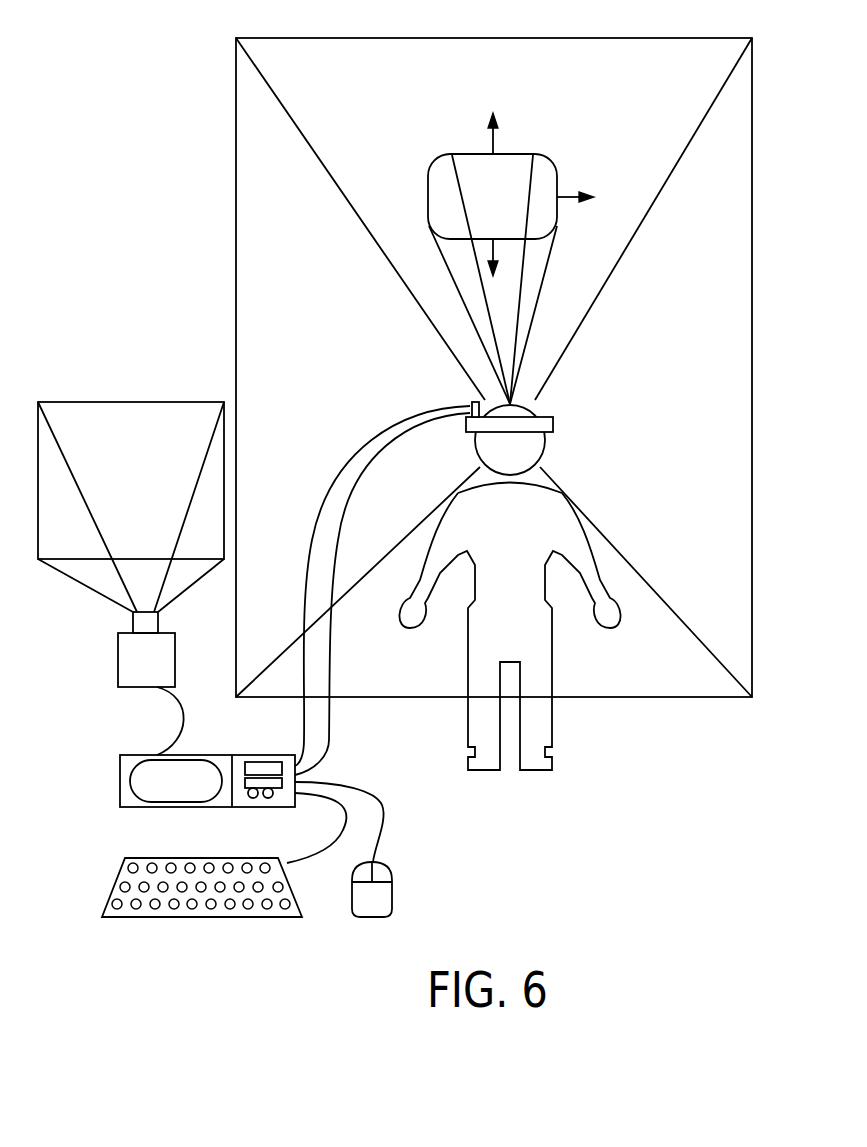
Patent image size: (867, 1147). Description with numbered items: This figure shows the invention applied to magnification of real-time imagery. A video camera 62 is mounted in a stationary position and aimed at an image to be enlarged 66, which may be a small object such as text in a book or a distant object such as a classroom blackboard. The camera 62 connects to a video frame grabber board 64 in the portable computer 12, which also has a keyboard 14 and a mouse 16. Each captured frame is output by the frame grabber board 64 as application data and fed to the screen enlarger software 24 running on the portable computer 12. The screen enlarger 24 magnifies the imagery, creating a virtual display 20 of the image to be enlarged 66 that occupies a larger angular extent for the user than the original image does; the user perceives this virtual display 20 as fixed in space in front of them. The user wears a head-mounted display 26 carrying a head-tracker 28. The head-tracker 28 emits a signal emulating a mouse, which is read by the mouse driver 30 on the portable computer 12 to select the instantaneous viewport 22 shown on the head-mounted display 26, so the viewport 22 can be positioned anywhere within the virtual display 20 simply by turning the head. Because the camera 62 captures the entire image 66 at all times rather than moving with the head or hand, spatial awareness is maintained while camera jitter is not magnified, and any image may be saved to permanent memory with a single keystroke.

The portable computer 12 is at (120, 785).
The keyboard 14 is at (108, 880).
The mouse 16 is at (392, 893).
The virtual display 20 is at (752, 340).
The instantaneous viewport 22 is at (527, 152).
The screen enlarger software 24 is at (145, 788).
The head-mounted display 26 is at (555, 422).
The head-tracker 28 is at (470, 400).
The mouse driver 30 is at (158, 772).
The video camera 62 is at (118, 653).
The video frame grabber board 64 is at (145, 773).
The image to be enlarged 66 is at (80, 402).